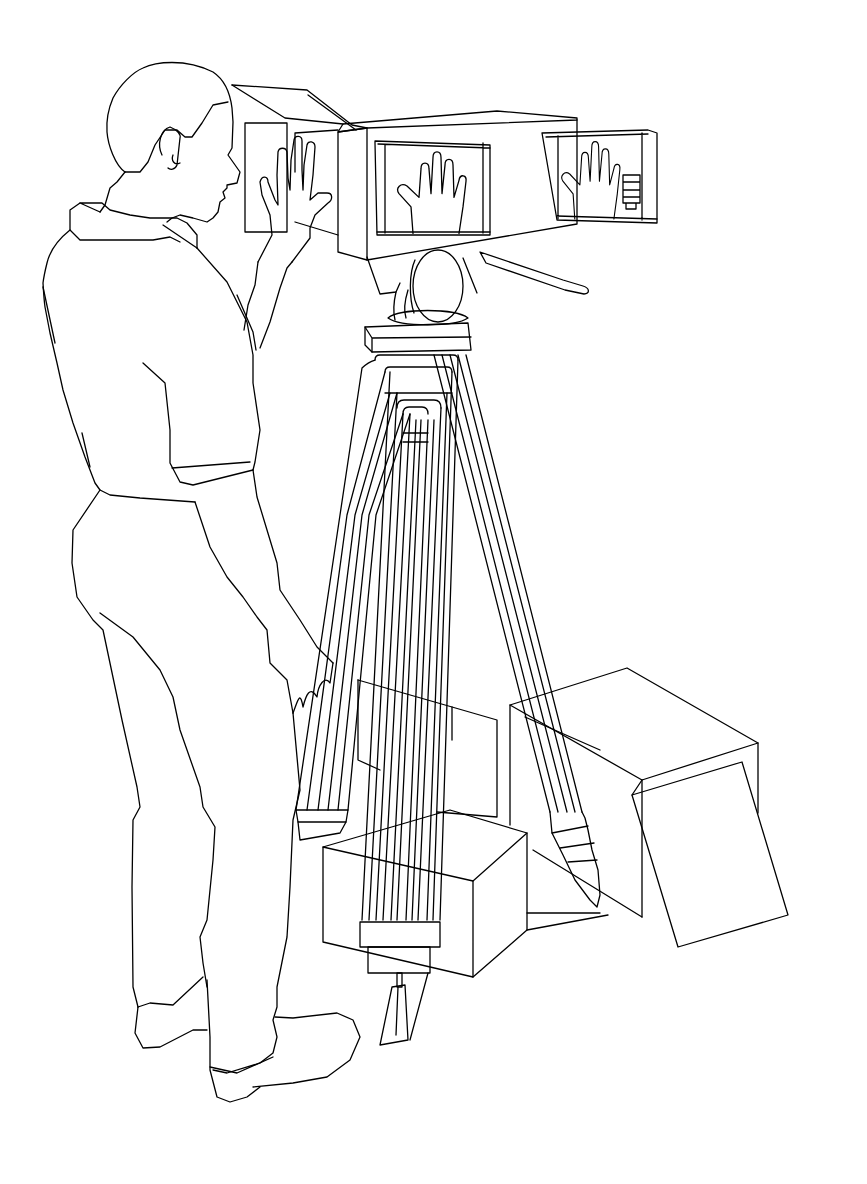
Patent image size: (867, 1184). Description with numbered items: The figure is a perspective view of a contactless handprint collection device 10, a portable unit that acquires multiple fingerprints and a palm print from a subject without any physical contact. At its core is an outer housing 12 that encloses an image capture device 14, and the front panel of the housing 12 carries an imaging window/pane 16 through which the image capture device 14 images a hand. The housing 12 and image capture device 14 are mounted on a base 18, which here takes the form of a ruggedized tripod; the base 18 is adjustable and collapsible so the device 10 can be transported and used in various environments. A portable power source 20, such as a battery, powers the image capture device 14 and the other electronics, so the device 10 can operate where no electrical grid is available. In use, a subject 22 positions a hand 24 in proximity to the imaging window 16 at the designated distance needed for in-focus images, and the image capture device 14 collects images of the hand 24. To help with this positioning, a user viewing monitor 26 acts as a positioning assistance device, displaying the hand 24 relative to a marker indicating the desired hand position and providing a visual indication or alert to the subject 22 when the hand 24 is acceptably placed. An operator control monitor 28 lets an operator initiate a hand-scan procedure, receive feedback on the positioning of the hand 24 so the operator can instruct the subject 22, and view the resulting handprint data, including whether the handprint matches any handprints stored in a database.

The contactless handprint collection device 10 is at (470, 36).
The outer housing 12 is at (523, 120).
The image capture device 14 is at (518, 198).
The imaging window/pane 16 is at (305, 147).
The base 18 is at (498, 488).
The portable power source 20 is at (480, 853).
The subject 22 is at (62, 388).
The hand 24 is at (322, 252).
The user viewing monitor 26 is at (473, 257).
The operator control monitor 28 is at (640, 185).